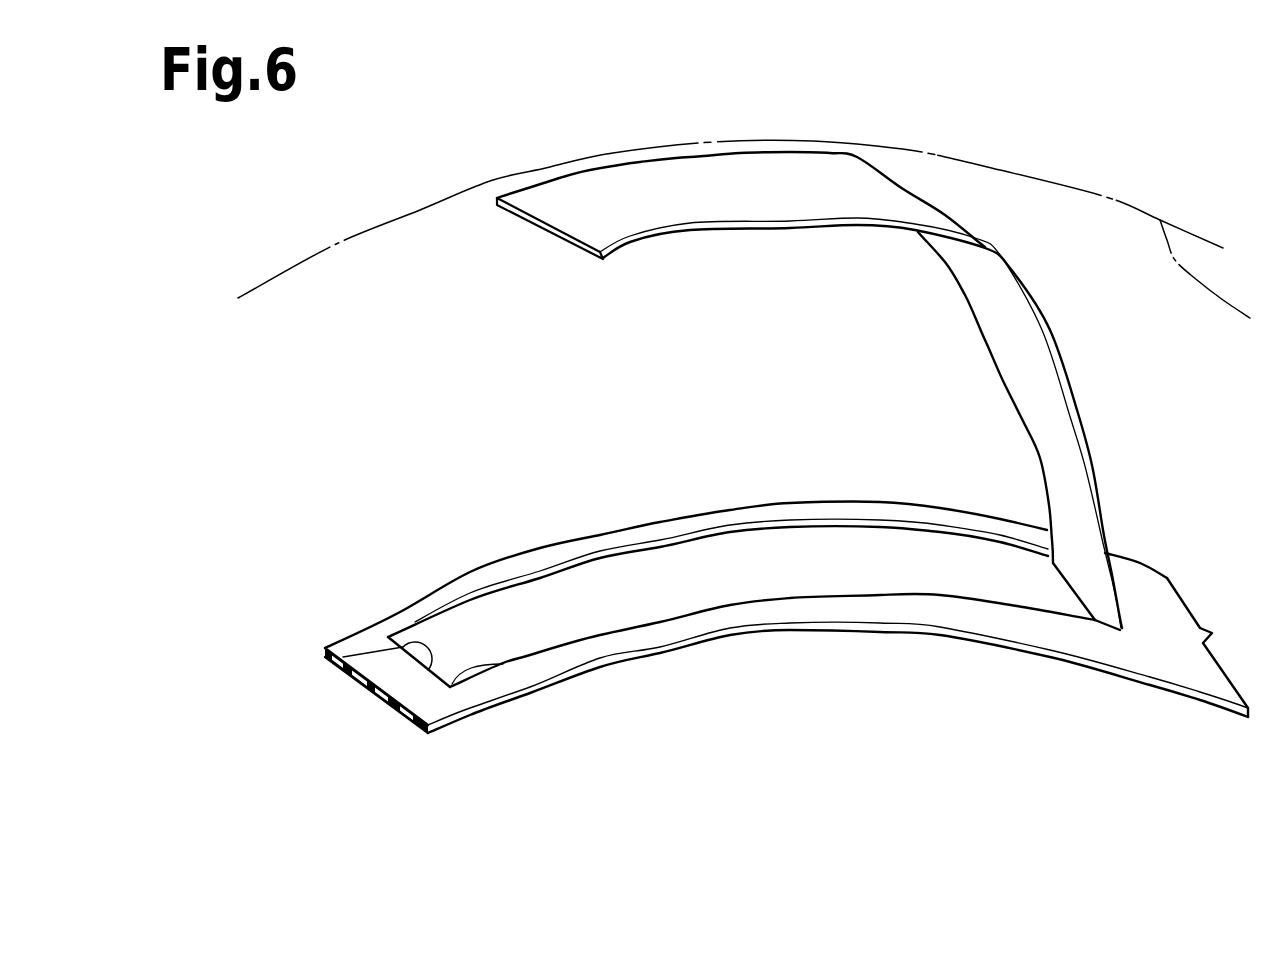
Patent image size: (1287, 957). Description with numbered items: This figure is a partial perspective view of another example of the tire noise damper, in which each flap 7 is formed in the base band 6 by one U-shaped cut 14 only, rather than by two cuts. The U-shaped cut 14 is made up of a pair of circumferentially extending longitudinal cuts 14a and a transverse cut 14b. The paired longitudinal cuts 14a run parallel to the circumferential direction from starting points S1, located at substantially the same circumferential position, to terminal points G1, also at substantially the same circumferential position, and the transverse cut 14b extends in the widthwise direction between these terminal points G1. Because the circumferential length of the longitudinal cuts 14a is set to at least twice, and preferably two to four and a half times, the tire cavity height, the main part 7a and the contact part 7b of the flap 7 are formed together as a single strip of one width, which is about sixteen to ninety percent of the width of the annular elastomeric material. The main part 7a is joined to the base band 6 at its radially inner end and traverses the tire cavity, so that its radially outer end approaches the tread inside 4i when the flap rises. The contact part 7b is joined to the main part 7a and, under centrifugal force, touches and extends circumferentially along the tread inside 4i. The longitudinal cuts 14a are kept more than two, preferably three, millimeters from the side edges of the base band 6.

The tread inside 4i is at (760, 245).
The base band 6 is at (704, 644).
The flap 7 is at (809, 390).
The main part 7a is at (997, 327).
The contact part 7b is at (717, 210).
The U-shaped cut 14 is at (298, 699).
The longitudinal cuts 14a is at (437, 613).
The transverse cut 14b is at (340, 663).
The terminal points G1 is at (452, 693).
The starting points S1 is at (1110, 632).